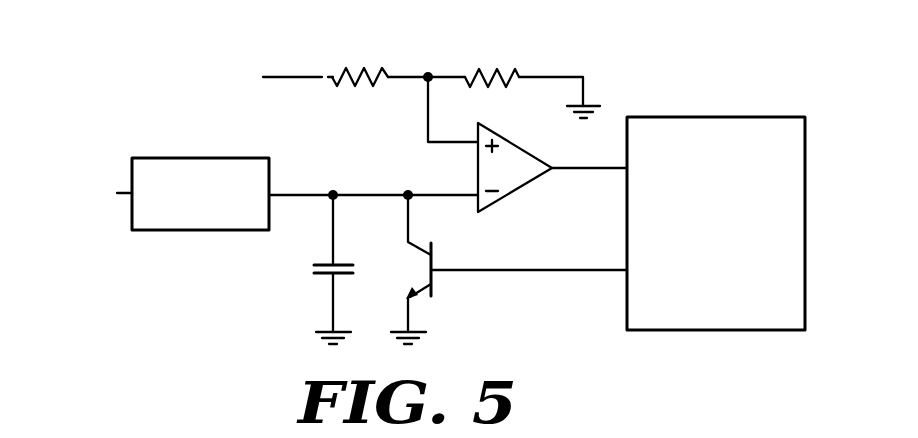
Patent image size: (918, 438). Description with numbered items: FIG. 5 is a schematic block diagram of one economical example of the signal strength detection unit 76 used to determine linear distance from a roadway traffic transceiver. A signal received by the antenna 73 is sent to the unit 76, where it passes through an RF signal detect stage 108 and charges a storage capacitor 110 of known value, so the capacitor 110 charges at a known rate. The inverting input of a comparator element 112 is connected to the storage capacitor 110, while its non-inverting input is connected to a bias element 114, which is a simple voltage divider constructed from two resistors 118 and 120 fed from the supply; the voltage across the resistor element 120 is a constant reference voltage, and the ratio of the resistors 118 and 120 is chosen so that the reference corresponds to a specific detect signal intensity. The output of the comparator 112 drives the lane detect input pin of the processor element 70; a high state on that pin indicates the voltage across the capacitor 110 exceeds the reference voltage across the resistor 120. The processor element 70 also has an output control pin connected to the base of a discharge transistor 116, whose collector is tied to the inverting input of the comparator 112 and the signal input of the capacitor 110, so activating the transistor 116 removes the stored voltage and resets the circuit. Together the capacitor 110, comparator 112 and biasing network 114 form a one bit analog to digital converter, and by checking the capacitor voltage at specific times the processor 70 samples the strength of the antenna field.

The processor element 70 is at (795, 181).
The antenna 73 is at (77, 198).
The signal strength detection unit 76 is at (438, 181).
The RF signal detector 108 is at (202, 158).
The storage capacitor 110 is at (312, 269).
The comparator element 112 is at (517, 160).
The bias element 114 is at (428, 54).
The discharge transistor 116 is at (436, 280).
The resistor 118 is at (357, 65).
The resistor element 120 is at (493, 70).